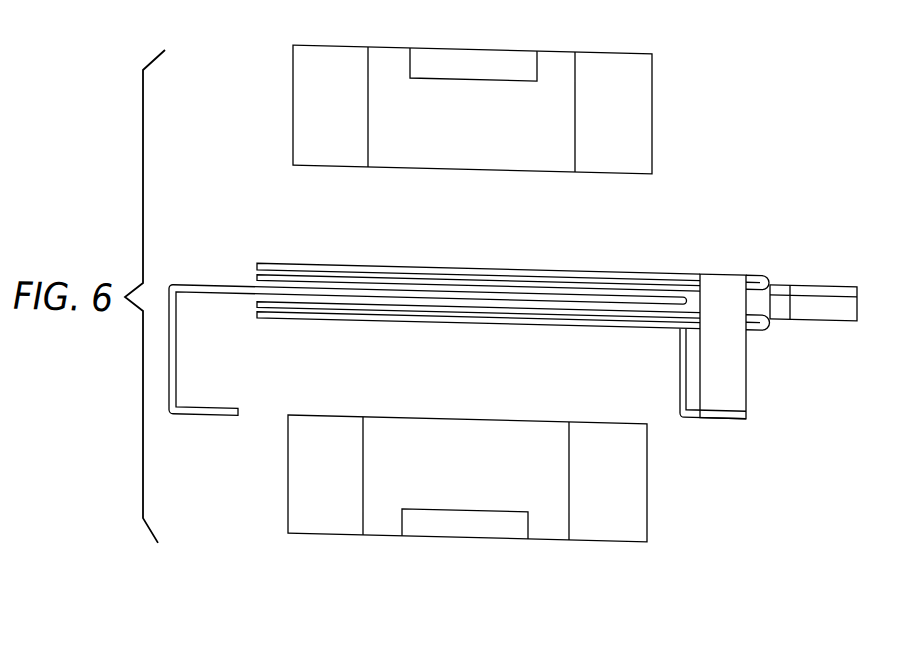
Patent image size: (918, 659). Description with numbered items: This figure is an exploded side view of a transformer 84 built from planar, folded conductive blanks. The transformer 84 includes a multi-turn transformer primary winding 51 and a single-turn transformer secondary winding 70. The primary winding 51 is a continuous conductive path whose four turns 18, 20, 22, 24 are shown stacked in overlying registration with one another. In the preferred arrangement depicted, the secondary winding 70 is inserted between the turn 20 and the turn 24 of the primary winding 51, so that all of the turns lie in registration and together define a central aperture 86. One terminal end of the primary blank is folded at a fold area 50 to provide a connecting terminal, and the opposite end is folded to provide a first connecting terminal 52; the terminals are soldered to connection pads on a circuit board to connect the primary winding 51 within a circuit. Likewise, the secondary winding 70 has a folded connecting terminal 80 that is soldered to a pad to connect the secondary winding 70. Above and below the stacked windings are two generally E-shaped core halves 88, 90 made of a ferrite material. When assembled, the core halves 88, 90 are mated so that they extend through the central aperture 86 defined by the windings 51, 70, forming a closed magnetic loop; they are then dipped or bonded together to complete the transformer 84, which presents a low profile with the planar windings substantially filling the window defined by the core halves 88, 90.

The turn 18 is at (312, 257).
The turn 20 is at (402, 274).
The turn 22 is at (455, 311).
The turn 24 is at (325, 304).
The fold area 50 is at (681, 362).
The transformer primary winding 51 is at (730, 247).
The first connecting terminal 52 is at (746, 370).
The transformer secondary winding 70 is at (230, 269).
The connecting terminal 80 is at (208, 402).
The transformer 84 is at (242, 60).
The central aperture 86 is at (485, 283).
The core half 88 is at (652, 87).
The core half 90 is at (647, 481).